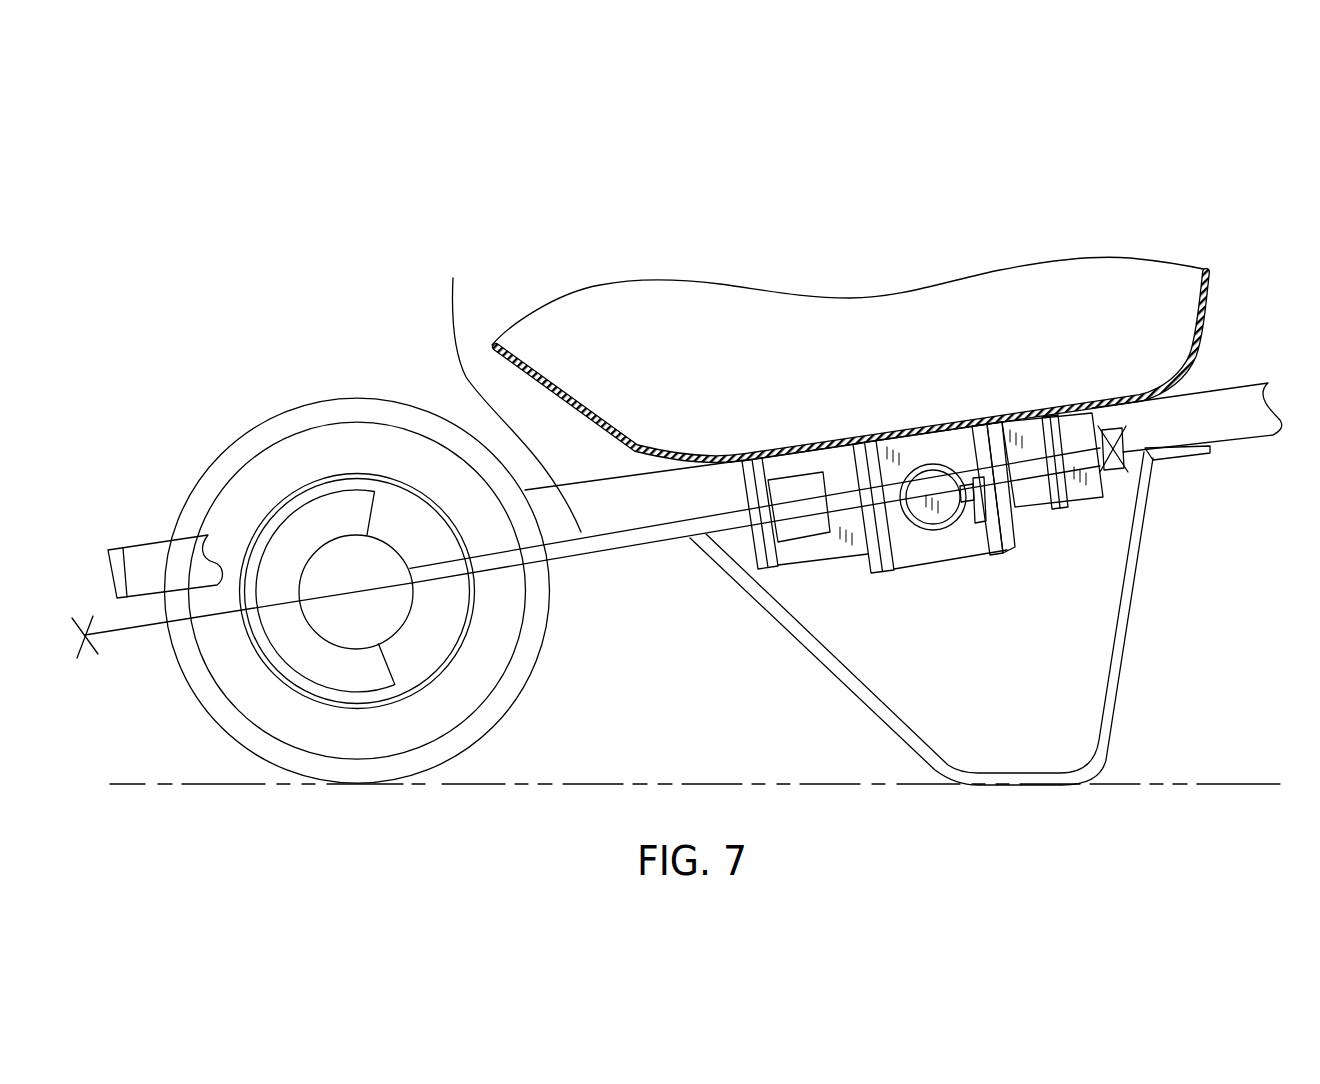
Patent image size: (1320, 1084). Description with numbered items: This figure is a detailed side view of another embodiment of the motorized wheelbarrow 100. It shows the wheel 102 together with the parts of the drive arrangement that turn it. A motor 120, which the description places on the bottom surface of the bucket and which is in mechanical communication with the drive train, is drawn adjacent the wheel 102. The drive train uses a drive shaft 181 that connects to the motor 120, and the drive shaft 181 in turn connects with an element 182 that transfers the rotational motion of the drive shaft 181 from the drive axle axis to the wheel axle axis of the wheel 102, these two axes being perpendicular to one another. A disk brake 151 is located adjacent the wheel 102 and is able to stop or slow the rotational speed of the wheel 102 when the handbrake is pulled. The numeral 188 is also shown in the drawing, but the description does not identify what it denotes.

The motorized wheelbarrow 100 is at (983, 178).
The wheel 102 is at (513, 708).
The motor 120 is at (820, 559).
The disk brake 151 is at (300, 528).
The drive shaft 181 is at (505, 386).
The element 182 is at (346, 534).
The axle 188 is at (140, 633).